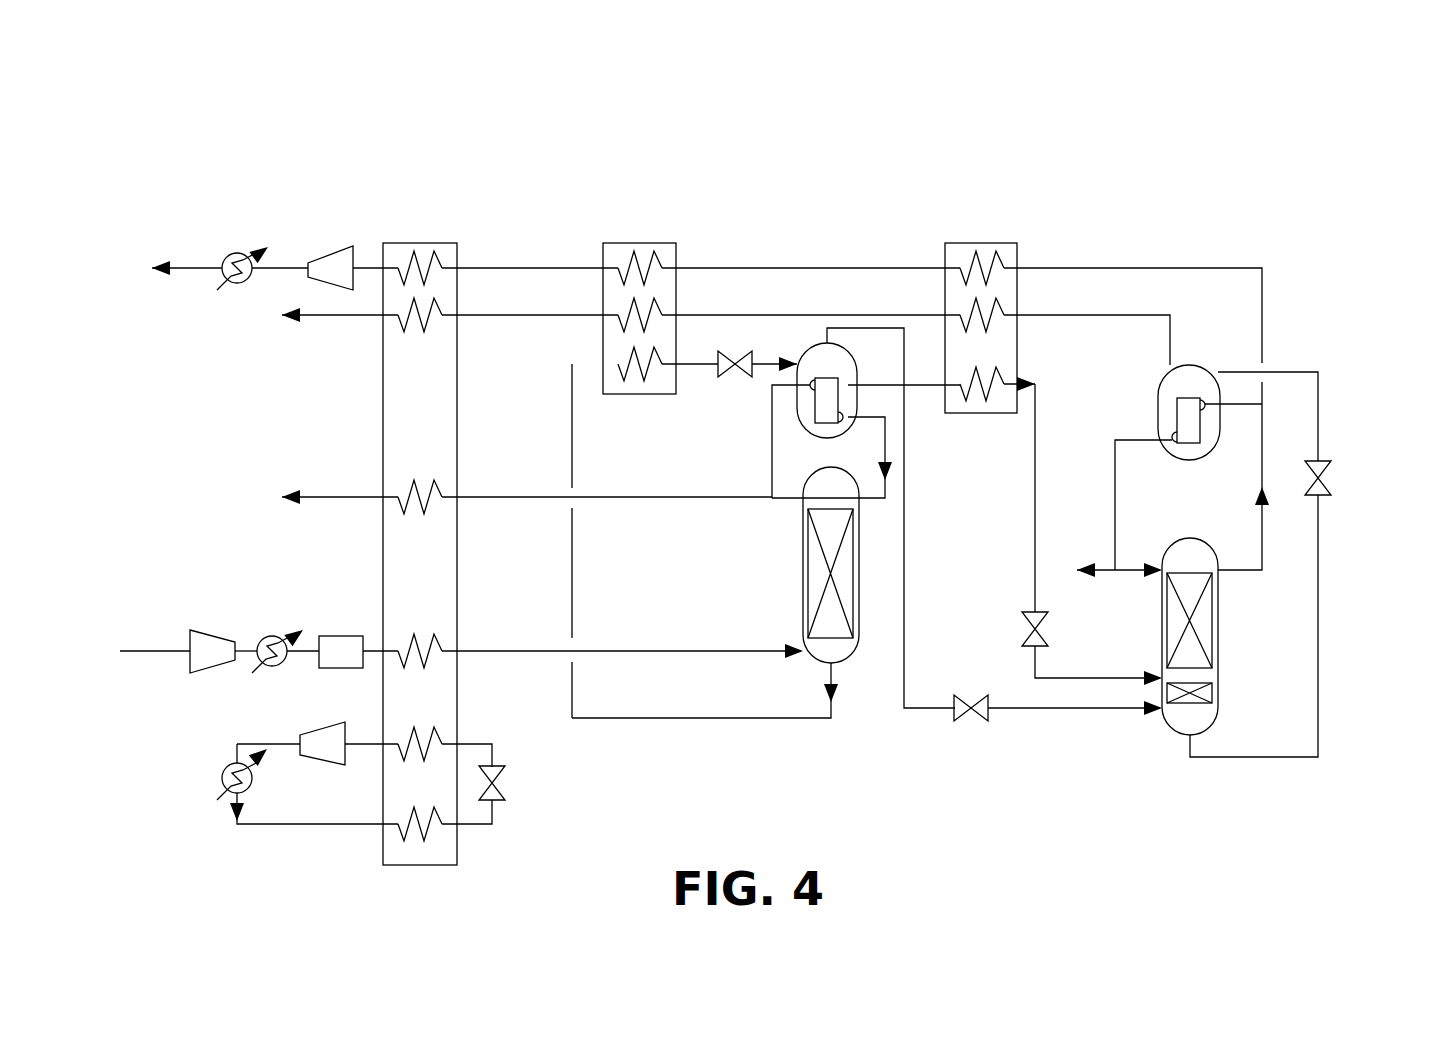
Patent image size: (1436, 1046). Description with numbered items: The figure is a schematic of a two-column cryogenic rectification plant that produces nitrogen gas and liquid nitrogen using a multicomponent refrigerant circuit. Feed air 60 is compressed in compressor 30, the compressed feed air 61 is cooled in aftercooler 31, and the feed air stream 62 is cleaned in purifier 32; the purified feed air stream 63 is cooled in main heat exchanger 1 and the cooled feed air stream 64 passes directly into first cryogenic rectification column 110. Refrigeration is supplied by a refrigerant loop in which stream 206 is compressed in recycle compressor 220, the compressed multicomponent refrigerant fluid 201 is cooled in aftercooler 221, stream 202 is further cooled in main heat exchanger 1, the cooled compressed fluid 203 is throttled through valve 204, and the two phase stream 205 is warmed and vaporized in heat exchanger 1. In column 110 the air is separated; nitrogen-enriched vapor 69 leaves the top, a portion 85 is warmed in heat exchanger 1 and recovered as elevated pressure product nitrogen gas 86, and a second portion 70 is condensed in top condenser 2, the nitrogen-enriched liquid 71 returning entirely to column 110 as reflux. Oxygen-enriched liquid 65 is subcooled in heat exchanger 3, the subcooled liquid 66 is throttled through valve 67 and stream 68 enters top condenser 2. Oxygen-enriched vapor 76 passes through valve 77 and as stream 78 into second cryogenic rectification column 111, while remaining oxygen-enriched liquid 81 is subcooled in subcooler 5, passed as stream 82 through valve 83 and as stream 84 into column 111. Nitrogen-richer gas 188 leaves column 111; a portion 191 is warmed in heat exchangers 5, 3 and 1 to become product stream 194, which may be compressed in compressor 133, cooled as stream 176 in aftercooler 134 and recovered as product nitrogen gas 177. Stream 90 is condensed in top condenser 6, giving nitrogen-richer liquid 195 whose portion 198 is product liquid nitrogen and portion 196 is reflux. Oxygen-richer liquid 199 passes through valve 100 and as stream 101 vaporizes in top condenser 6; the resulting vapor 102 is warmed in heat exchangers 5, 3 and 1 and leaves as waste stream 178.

The main heat exchanger 1 is at (433, 243).
The top condenser 2 is at (812, 436).
The heat exchanger 3 is at (655, 243).
The subcooler 5 is at (995, 243).
The top condenser 6 is at (1160, 382).
The compressor 30 is at (197, 630).
The aftercooler 31 is at (260, 638).
The purifier 32 is at (338, 636).
The feed air 60 is at (145, 651).
The compressed feed air 61 is at (243, 655).
The feed air stream 62 is at (305, 618).
The purified feed air stream 63 is at (372, 655).
The cooled feed air stream 64 is at (704, 651).
The oxygen-enriched liquid stream 65 is at (712, 718).
The subcooled oxygen-enriched liquid 66 is at (706, 364).
The valve 67 is at (737, 352).
The stream 68 is at (776, 360).
The nitrogen-enriched vapor stream 69 is at (787, 500).
The second portion of nitrogen-enriched vapor 70 is at (772, 467).
The nitrogen-enriched liquid stream 71 is at (857, 398).
The oxygen-enriched vapor stream 76 is at (905, 328).
The valve 77 is at (972, 724).
The stream 78 is at (1060, 713).
The oxygen-enriched liquid stream 81 is at (913, 387).
The subcooled oxygen-enriched liquid stream 82 is at (1036, 400).
The valve 83 is at (1025, 632).
The stream 84 is at (1100, 678).
The portion of nitrogen-enriched vapor 85 is at (650, 500).
The elevated pressure product nitrogen gas stream 86 is at (330, 497).
The stream 90 is at (1222, 408).
The valve 100 is at (1332, 478).
The stream 101 is at (1292, 372).
The oxygen-richer vapor stream 102 is at (1108, 315).
The first cryogenic rectification column 110 is at (803, 618).
The second cryogenic rectification column 111 is at (1218, 648).
The compressor 133 is at (328, 252).
The aftercooler 134 is at (237, 253).
The stream 176 is at (280, 267).
The product nitrogen gas stream 177 is at (180, 265).
The waste stream 178 is at (332, 316).
The nitrogen-richer gas stream 188 is at (1258, 478).
The portion of nitrogen-richer gas 191 is at (1207, 267).
The product nitrogen gas stream 194 is at (370, 268).
The nitrogen-richer liquid stream 195 is at (1115, 482).
The reflux portion 196 is at (1128, 570).
The product liquid nitrogen portion 198 is at (1105, 580).
The oxygen-richer liquid stream 199 is at (1240, 757).
The compressed multicomponent refrigerant fluid 201 is at (237, 744).
The multicomponent refrigerant fluid stream 202 is at (298, 826).
The cooled compressed multicomponent refrigerant fluid 203 is at (500, 824).
The valve 204 is at (505, 782).
The refrigeration bearing multicomponent two phase refrigerant fluid stream 205 is at (493, 750).
The warmed multicomponent refrigerant fluid vapor stream 206 is at (362, 746).
The recycle compressor 220 is at (320, 722).
The aftercooler 221 is at (215, 780).